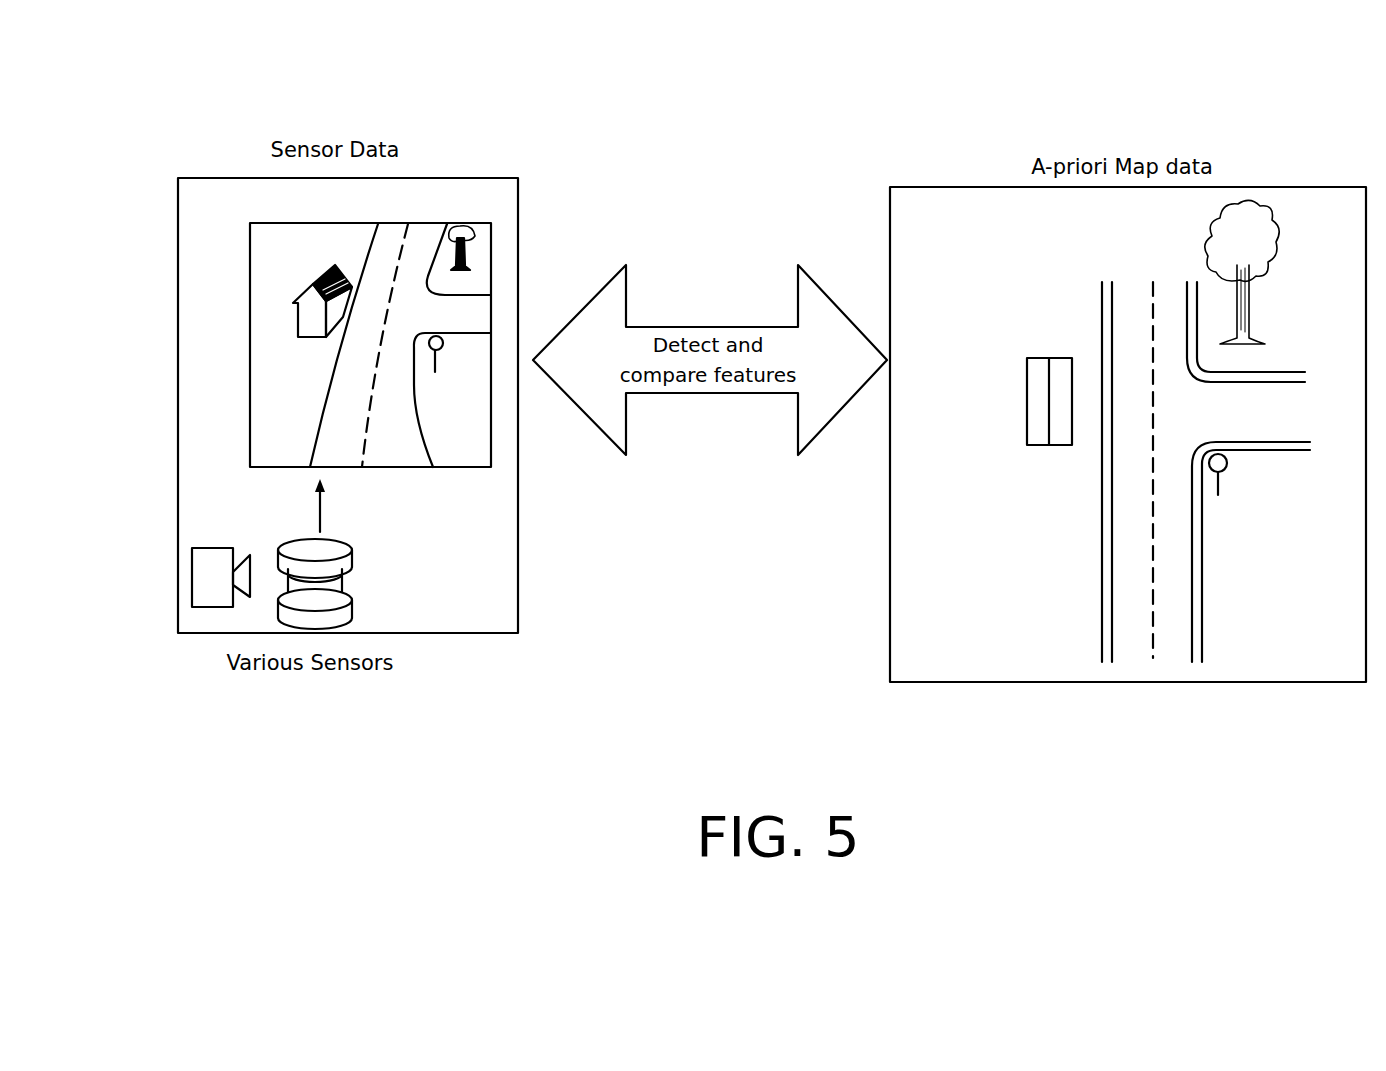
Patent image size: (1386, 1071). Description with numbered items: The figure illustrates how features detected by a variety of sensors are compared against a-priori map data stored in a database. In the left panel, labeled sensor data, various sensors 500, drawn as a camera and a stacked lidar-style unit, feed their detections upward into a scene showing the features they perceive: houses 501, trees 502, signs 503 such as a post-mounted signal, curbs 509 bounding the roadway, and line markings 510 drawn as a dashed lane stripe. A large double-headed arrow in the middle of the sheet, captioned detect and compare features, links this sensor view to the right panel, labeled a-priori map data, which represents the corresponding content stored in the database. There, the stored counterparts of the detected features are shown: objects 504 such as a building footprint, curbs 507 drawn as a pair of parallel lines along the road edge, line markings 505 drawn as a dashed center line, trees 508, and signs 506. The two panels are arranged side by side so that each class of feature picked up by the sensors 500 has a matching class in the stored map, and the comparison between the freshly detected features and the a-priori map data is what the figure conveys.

The various sensors 500 is at (332, 590).
The houses 501 is at (302, 287).
The trees 502 is at (463, 230).
The signs 503 is at (441, 352).
The objects 504 is at (1048, 428).
The line markings 505 is at (1148, 292).
The signs 506 is at (1225, 475).
The curbs 507 is at (1102, 600).
The trees 508 is at (1243, 207).
The curbs 509 is at (318, 403).
The line markings 510 is at (360, 428).